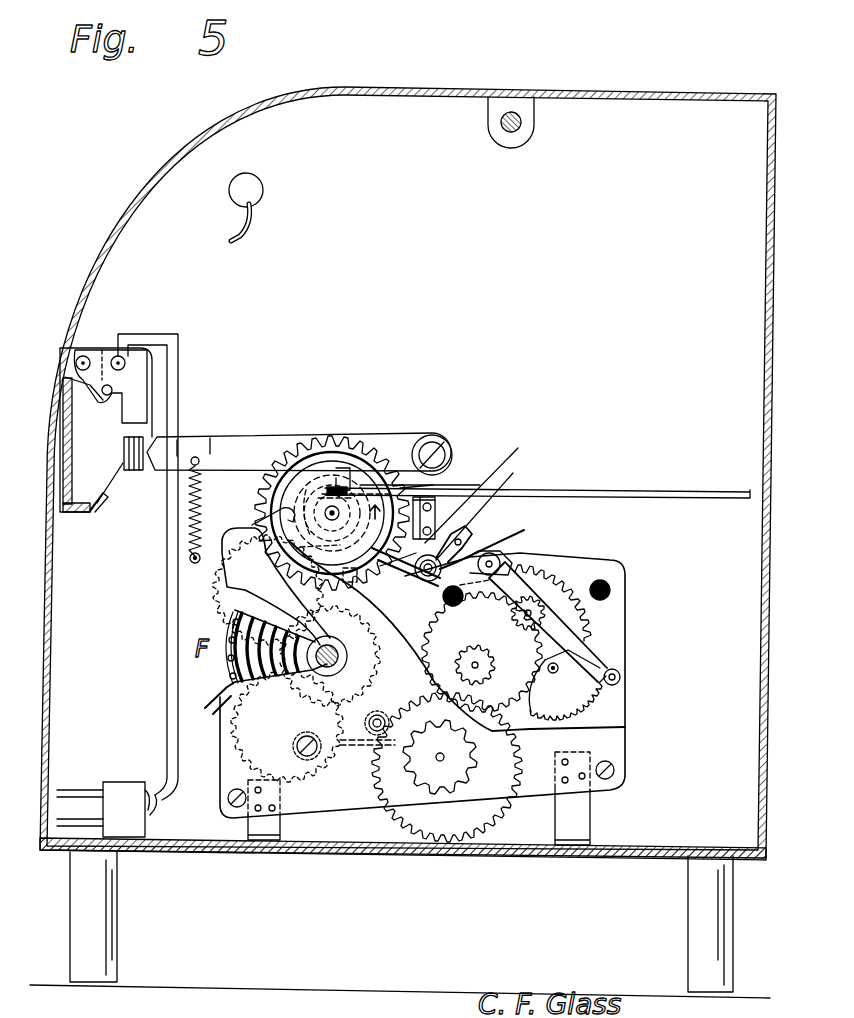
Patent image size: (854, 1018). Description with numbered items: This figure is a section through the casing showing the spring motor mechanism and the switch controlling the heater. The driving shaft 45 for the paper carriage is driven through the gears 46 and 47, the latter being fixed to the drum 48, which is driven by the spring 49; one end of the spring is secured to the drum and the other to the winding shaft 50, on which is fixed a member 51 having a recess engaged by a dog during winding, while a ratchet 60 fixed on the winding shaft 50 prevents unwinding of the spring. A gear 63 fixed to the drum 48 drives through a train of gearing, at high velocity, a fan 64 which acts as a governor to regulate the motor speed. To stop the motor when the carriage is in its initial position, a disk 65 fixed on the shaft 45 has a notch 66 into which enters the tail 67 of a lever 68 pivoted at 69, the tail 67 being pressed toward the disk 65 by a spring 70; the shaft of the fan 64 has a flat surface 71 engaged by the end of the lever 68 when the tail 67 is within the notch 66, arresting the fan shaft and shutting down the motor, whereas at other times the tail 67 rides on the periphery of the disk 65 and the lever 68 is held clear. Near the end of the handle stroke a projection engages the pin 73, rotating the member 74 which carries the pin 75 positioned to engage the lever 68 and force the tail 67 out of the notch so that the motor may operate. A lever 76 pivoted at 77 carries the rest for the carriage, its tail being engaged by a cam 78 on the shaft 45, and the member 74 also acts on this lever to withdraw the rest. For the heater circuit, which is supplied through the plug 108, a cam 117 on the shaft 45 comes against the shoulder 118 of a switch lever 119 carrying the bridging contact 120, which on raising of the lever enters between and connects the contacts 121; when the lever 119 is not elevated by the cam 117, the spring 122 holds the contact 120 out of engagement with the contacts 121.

The shaft 45 is at (372, 462).
The gear 46 is at (338, 476).
The gear 47 is at (388, 612).
The drum 48 is at (246, 621).
The spring 49 is at (236, 627).
The winding shaft 50 is at (327, 667).
The member 51 is at (312, 710).
The ratchet 60 is at (305, 620).
The gear 63 is at (213, 707).
The fan 64 is at (631, 679).
The disk 65 is at (433, 485).
The notch 66 is at (330, 562).
The tail 67 is at (394, 578).
The lever 68 is at (575, 633).
The pivot 69 is at (495, 551).
The spring 70 is at (447, 556).
The flat surface 71 is at (598, 675).
The pin 73 is at (492, 552).
The member 74 is at (438, 518).
The pin 75 is at (489, 509).
The lever 76 is at (648, 492).
The pivot 77 is at (485, 488).
The cam 78 is at (336, 506).
The plug 108 is at (117, 585).
The cam 117 is at (272, 508).
The shoulder 118 is at (341, 466).
The switch lever 119 is at (299, 454).
The bridging contact 120 is at (137, 472).
The contacts 121 is at (106, 430).
The spring 122 is at (192, 517).